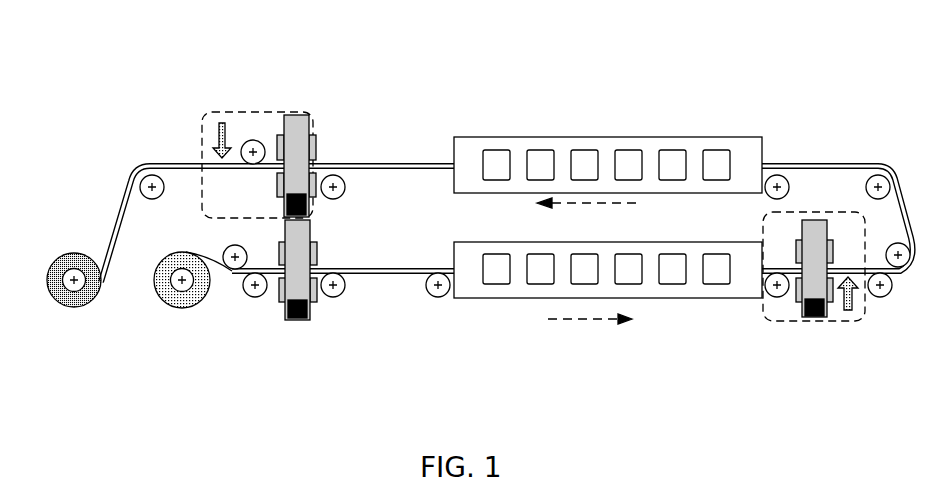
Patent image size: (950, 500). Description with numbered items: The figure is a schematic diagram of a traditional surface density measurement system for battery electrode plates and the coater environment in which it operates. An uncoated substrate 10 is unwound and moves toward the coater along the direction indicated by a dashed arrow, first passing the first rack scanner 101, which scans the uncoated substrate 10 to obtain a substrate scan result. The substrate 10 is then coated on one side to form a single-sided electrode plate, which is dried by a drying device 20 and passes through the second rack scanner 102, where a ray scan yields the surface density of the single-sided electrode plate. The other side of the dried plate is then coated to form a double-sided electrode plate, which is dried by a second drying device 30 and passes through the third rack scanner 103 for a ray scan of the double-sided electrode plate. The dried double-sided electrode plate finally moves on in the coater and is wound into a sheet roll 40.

The substrate 10 is at (200, 302).
The drying device 20 is at (536, 298).
The drying device 30 is at (609, 136).
The sheet roll 40 is at (73, 308).
The first rack scanner 101 is at (300, 321).
The second rack scanner 102 is at (815, 321).
The third rack scanner 103 is at (250, 111).